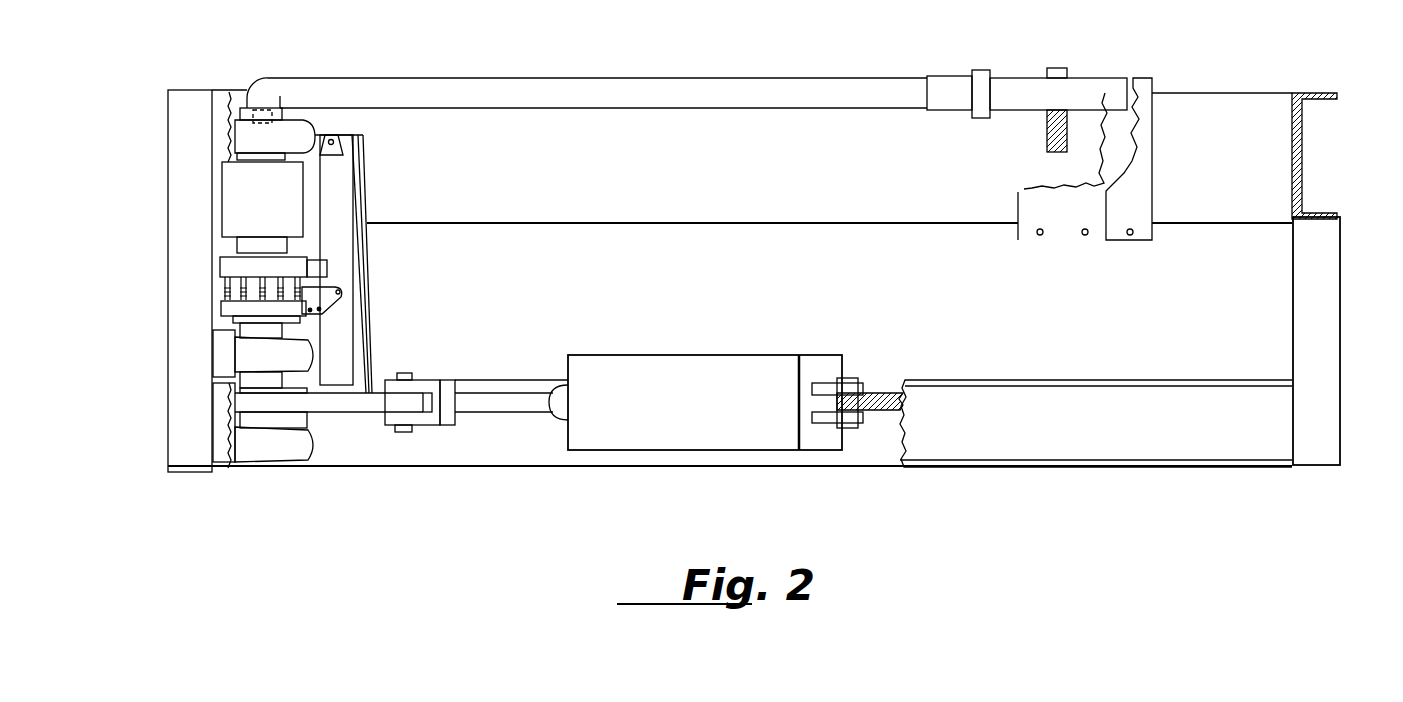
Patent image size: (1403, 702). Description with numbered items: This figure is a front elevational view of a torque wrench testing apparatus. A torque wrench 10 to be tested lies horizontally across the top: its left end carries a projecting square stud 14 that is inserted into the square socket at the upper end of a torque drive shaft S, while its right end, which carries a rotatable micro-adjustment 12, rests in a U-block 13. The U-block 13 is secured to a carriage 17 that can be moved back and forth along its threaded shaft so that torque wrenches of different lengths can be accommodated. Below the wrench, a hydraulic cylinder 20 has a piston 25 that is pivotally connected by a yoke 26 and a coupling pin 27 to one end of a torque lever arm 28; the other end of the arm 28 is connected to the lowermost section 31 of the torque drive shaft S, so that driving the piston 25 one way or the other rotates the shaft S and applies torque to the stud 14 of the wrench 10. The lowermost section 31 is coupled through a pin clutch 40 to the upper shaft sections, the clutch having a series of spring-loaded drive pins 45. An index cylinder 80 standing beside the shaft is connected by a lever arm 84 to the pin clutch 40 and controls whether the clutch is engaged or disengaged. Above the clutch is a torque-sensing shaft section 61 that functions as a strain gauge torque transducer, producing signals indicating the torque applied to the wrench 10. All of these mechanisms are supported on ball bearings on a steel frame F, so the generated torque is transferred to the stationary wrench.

The torque wrench 10 is at (628, 90).
The rotatable micro-adjustment 12 is at (1097, 85).
The U-block 13 is at (1057, 67).
The square stud 14 is at (260, 110).
The carriage 17 is at (1145, 115).
The hydraulic cylinder 20 is at (680, 367).
The piston 25 is at (494, 400).
The yoke 26 is at (432, 420).
The coupling pin 27 is at (412, 375).
The torque lever arm 28 is at (358, 403).
The lowermost section 31 is at (250, 418).
The pin clutch 40 is at (216, 271).
The spring-loaded drive pins 45 is at (225, 281).
The torque-sensing shaft section 61 is at (248, 190).
The index cylinder 80 is at (337, 207).
The lever arm 84 is at (330, 305).
The torque drive shaft S is at (269, 427).
The steel frame F is at (1317, 278).